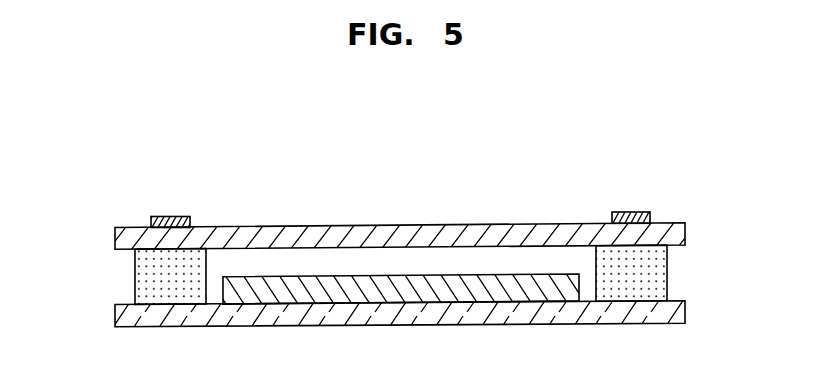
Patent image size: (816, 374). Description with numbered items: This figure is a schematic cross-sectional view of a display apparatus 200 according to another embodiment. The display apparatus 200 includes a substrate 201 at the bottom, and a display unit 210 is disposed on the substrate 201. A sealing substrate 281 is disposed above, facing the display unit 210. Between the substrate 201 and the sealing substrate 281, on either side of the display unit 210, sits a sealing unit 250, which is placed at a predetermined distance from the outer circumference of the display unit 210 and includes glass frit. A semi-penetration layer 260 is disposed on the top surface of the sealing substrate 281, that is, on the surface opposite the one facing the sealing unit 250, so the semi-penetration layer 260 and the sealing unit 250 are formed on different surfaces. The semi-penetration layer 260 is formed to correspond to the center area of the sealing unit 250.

The display apparatus 200 is at (645, 179).
The substrate 201 is at (676, 314).
The display unit 210 is at (411, 287).
The sealing unit 250 is at (148, 275).
The semi-penetration layer 260 is at (172, 216).
The sealing substrate 281 is at (673, 236).